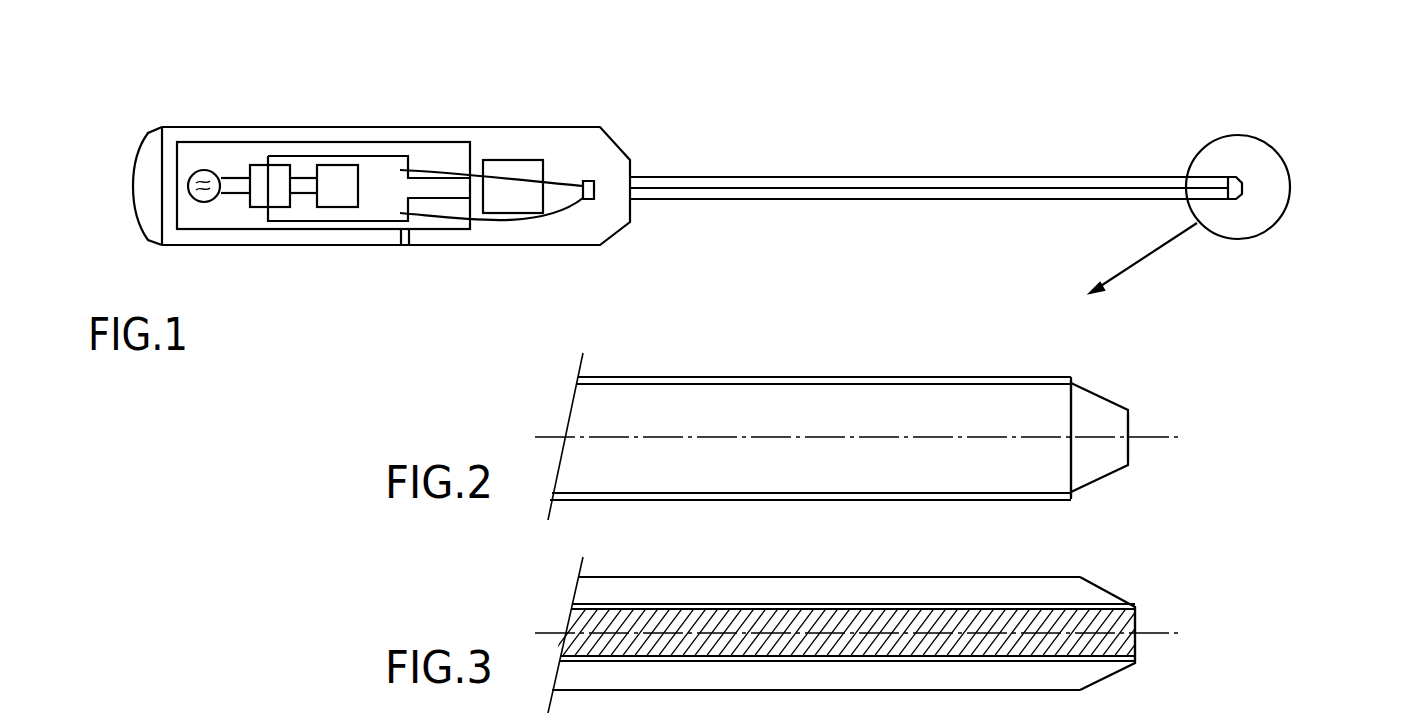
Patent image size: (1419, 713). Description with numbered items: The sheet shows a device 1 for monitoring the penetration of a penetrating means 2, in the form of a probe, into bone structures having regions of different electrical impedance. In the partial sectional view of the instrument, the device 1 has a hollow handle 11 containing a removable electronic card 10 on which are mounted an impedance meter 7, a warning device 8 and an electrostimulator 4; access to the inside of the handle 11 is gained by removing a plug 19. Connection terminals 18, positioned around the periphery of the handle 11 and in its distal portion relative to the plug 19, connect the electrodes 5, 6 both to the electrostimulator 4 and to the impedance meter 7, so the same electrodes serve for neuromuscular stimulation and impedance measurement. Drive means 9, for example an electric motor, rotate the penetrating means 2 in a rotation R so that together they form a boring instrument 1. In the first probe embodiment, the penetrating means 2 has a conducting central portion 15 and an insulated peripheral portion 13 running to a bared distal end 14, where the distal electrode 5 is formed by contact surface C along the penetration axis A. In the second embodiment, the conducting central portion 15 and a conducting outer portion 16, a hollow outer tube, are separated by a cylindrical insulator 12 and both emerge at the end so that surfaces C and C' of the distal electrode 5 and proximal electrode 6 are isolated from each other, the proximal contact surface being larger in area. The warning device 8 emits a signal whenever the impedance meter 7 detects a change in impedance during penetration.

In FIG. 1, the device 1 is at (545, 108).
In FIG. 1, the penetrating means 2 is at (925, 178).
In FIG. 2, the penetrating means 2 is at (771, 372).
In FIG. 3, the penetrating means 2 is at (771, 576).
In FIG. 1, the electrostimulator 4 is at (340, 185).
In FIG. 1, the distal electrode 5 is at (1258, 166).
In FIG. 2, the distal electrode 5 is at (1165, 410).
In FIG. 3, the distal electrode 5 is at (1165, 608).
In FIG. 3, the proximal electrode 6 is at (1087, 578).
In FIG. 1, the impedance meter 7 is at (275, 185).
In FIG. 1, the warning device 8 is at (203, 170).
In FIG. 1, the drive means 9 is at (512, 172).
In FIG. 1, the removable electronic card 10 is at (432, 142).
In FIG. 1, the hollow handle 11 is at (284, 232).
In FIG. 3, the insulator 12 is at (1136, 666).
In FIG. 2, the peripheral portion 13 is at (938, 378).
In FIG. 2, the distal end 14 is at (1096, 382).
In FIG. 3, the distal end 14 is at (1129, 584).
In FIG. 2, the central portion 15 is at (994, 400).
In FIG. 3, the central portion 15 is at (868, 625).
In FIG. 3, the outer portion 16 is at (938, 594).
In FIG. 1, the connection terminals 18 is at (594, 186).
In FIG. 1, the plug 19 is at (146, 155).